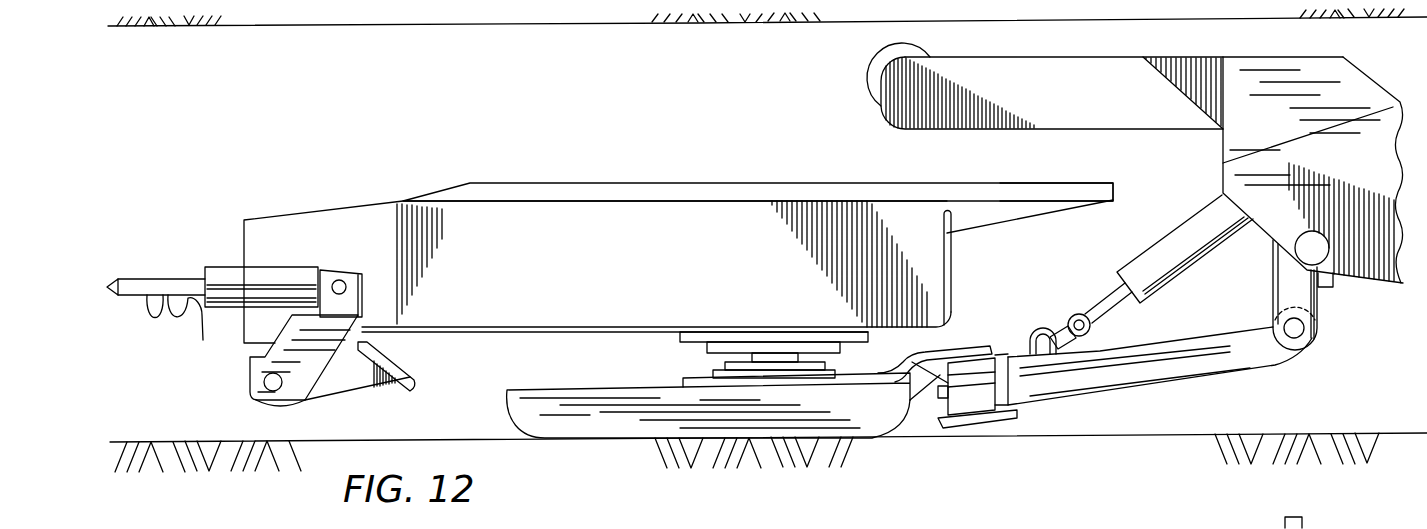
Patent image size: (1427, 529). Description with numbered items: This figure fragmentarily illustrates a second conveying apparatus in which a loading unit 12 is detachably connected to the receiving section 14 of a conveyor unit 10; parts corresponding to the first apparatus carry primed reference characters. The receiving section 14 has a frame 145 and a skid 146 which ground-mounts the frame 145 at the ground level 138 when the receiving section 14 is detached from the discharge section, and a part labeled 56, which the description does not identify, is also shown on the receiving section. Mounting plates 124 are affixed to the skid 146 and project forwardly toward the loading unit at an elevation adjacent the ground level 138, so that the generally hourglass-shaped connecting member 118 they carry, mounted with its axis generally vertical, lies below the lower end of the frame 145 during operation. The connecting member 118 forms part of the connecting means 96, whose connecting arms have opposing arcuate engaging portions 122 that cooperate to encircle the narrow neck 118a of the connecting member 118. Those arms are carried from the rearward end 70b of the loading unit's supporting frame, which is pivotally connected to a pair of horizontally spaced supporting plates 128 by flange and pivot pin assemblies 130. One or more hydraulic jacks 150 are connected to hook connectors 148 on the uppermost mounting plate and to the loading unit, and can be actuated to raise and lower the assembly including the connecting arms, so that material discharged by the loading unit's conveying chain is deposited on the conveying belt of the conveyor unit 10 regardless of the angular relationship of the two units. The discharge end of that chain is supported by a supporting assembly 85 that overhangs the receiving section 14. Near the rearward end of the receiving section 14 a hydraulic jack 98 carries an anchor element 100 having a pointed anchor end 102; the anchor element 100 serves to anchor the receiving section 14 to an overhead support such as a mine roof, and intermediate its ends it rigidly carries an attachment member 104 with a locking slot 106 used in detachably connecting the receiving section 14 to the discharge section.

The conveyor unit 10 is at (780, 179).
The loading unit 12 is at (1257, 236).
The receiving section 14 is at (598, 184).
The rail 56 is at (903, 188).
The rearward end of the loading unit supporting frame 70b is at (1353, 278).
The supporting assembly 85 is at (1065, 107).
The connecting means 96 is at (1010, 333).
The hydraulic jack 98 is at (259, 275).
The anchor element 100 is at (185, 279).
The anchor end 102 is at (115, 282).
The attachment member 104 is at (203, 343).
The locking slot 106 is at (170, 320).
The connecting member 118 is at (992, 415).
The narrow neck 118a is at (943, 398).
The engaging portions 122 is at (995, 388).
The mounting plates 124 is at (942, 354).
The supporting plates 128 is at (1188, 375).
The flange and pivot pin assemblies 130 is at (1297, 330).
The ground level 138 is at (423, 440).
The frame 145 is at (952, 266).
The skid 146 is at (596, 430).
The hook connectors 148 is at (1048, 328).
The hydraulic jacks 150 is at (1178, 268).